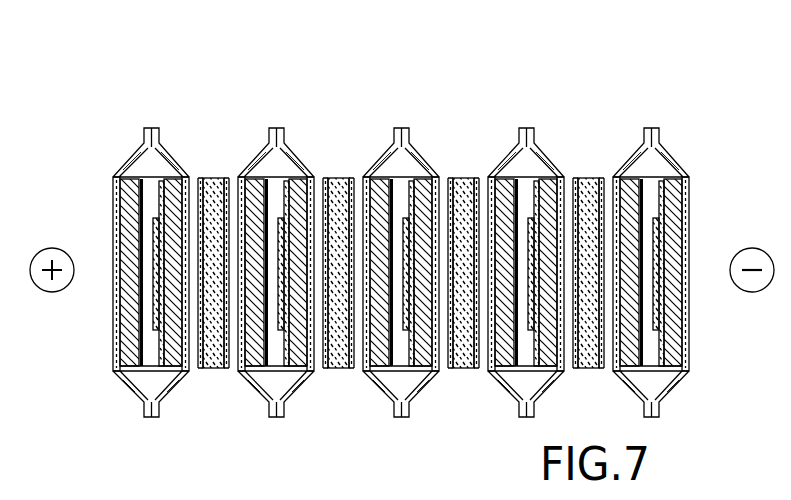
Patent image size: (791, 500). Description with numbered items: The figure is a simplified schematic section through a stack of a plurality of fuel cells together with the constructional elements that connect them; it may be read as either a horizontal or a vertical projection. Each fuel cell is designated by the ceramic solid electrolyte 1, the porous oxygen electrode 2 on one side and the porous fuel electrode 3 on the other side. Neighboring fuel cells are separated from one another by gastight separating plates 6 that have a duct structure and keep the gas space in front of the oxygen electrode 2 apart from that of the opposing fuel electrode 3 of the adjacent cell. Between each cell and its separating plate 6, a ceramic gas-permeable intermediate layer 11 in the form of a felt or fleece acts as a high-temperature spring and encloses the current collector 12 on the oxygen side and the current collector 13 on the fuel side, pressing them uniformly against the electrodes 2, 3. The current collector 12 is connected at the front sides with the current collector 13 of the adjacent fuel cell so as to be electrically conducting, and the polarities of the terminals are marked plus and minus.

The ceramic solid electrolyte 1 is at (213, 177).
The oxygen electrode 2 is at (202, 177).
The fuel electrode 3 is at (228, 177).
The separating plate 6 is at (148, 376).
The intermediate layer 11 is at (670, 165).
The current collector on the oxygen side 12 is at (118, 343).
The current collector on the fuel side 13 is at (690, 340).